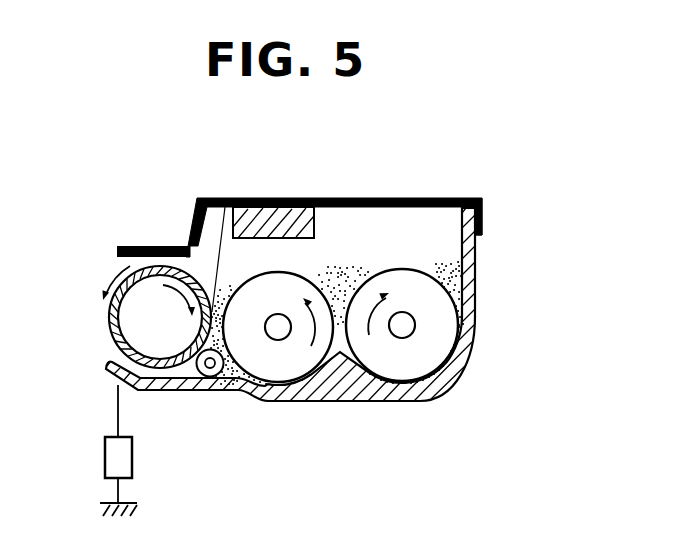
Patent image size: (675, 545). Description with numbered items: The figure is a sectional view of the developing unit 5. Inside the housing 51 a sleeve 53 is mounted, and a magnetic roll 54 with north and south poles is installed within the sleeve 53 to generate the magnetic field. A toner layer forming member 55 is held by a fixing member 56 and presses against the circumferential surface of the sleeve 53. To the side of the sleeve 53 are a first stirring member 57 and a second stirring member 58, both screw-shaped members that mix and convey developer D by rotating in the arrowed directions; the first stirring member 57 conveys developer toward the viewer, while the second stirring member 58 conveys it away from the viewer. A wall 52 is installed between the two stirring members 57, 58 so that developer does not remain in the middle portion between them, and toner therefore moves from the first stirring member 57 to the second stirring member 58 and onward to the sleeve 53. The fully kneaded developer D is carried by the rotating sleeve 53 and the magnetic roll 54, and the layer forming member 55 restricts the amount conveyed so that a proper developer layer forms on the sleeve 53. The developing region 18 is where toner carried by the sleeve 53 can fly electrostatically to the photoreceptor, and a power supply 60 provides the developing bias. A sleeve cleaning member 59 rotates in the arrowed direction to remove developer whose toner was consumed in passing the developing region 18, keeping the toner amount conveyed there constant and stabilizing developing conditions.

The developing unit 5 is at (355, 182).
The developing region 18 is at (90, 288).
The housing 51 is at (420, 199).
The wall 52 is at (340, 380).
The sleeve 53 is at (147, 251).
The magnetic roll 54 is at (138, 332).
The toner layer forming member 55 is at (213, 237).
The fixing member 56 is at (266, 210).
The first stirring member 57 is at (278, 368).
The second stirring member 58 is at (405, 372).
The sleeve cleaning member 59 is at (210, 377).
The power supply 60 is at (132, 455).
The developer D is at (475, 287).